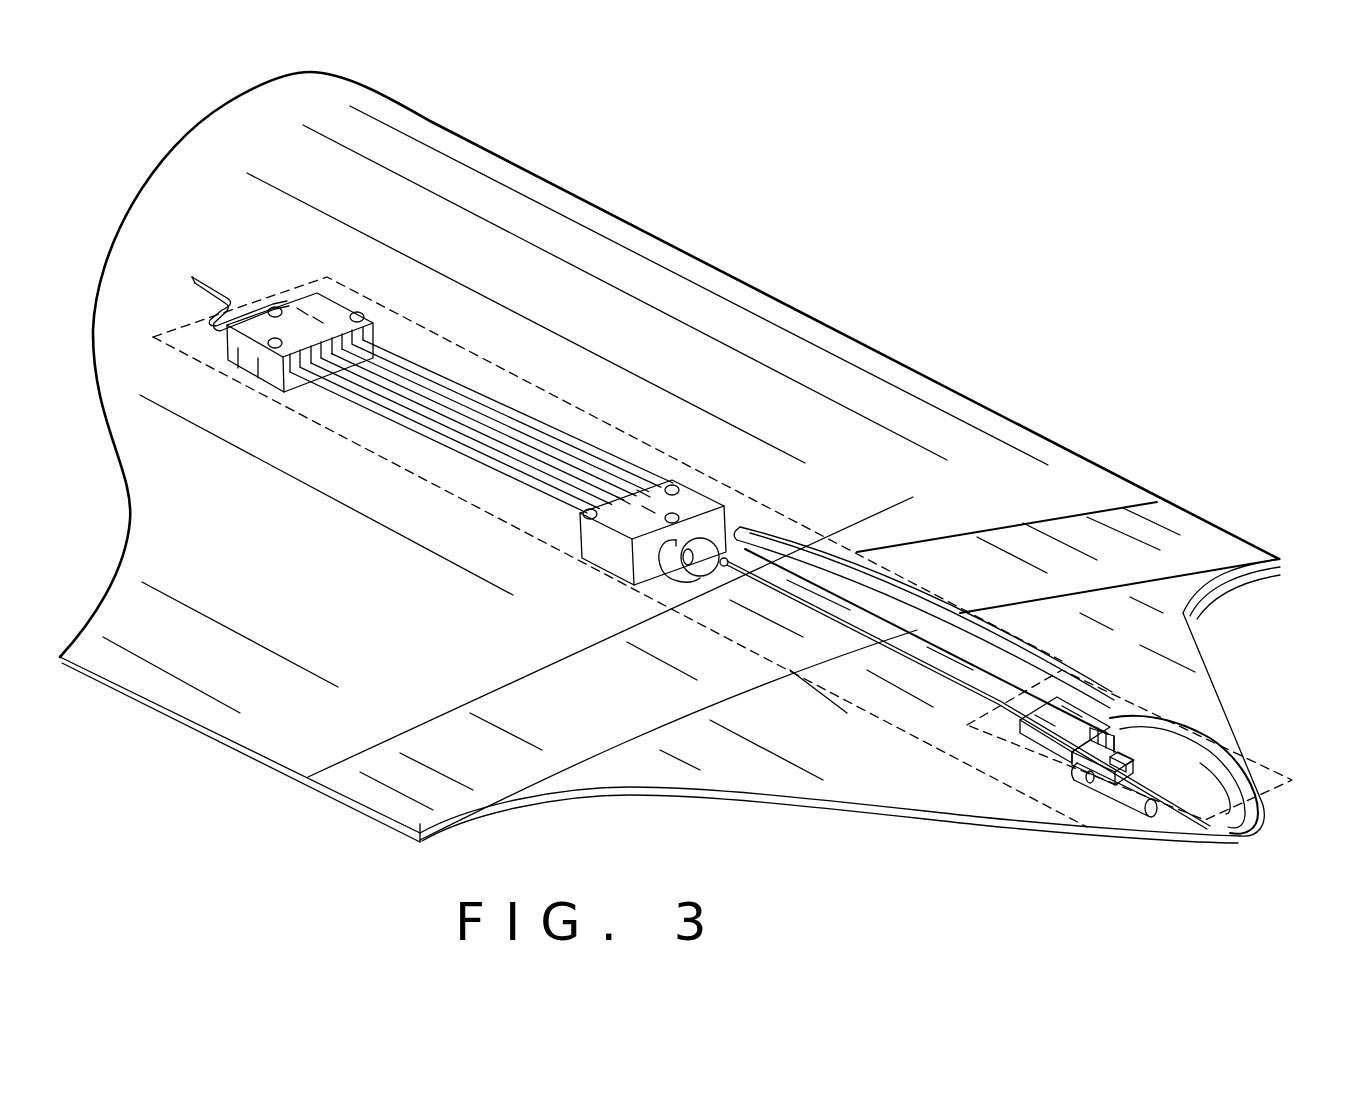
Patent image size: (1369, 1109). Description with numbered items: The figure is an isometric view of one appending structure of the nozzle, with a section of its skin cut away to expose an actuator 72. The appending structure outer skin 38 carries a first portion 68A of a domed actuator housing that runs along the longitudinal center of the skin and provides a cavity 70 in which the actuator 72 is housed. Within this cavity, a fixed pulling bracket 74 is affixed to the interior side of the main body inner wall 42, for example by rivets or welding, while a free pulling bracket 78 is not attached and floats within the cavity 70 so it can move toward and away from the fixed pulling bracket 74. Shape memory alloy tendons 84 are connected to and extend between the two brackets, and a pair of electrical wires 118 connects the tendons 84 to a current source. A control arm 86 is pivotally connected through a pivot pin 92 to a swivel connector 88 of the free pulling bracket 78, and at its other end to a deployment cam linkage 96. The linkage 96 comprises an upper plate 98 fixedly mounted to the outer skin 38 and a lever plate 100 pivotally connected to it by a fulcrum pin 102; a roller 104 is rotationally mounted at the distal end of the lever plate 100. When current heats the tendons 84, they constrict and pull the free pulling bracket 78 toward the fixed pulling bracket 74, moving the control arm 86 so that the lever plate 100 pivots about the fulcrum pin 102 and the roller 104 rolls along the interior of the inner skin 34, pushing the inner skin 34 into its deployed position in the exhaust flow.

The appending structure inner skin 34 is at (853, 754).
The appending structure outer skin 38 is at (1116, 678).
The main body inner wall 42 is at (253, 570).
The first portion of the domed actuator housing 68A is at (937, 617).
The cavity 70 is at (957, 655).
The actuator 72 is at (380, 307).
The fixed pulling bracket 74 is at (256, 351).
The free pulling bracket 78 is at (612, 540).
The shape memory alloy tendon 84 is at (470, 407).
The control arm 86 is at (880, 645).
The swivel connector 88 is at (673, 556).
The pivot pin 92 is at (687, 556).
The deployment cam linkage 96 is at (1080, 763).
The upper plate 98 is at (1020, 726).
The lever plate 100 is at (1123, 812).
The fulcrum pin 102 is at (1067, 763).
The roller 104 is at (1207, 805).
The electrical wires 118 is at (207, 315).